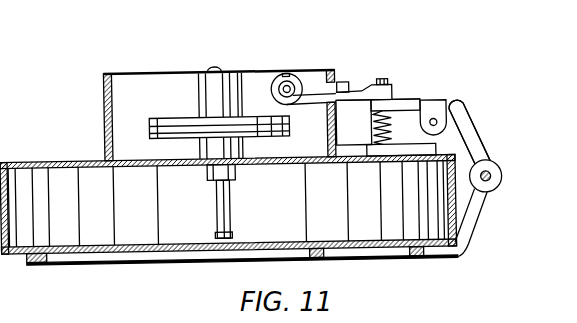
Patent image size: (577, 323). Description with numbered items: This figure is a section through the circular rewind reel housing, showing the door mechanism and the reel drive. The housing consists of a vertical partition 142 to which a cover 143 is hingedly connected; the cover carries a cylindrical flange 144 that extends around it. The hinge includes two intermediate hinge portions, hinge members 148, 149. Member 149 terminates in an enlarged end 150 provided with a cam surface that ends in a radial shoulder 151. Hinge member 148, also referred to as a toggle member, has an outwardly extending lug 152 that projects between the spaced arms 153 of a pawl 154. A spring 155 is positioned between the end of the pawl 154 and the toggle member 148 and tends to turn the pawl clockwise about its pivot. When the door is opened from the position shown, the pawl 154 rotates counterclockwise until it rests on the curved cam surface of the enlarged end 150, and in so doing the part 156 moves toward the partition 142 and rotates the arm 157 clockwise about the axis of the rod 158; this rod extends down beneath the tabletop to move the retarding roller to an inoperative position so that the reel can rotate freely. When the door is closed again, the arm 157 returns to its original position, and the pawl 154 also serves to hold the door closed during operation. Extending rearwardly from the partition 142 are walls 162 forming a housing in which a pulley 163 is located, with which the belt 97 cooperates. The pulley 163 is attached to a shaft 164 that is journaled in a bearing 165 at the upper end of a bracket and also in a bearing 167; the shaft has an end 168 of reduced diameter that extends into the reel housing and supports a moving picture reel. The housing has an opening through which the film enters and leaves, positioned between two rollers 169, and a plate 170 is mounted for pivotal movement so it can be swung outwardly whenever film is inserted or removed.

The belt 97 is at (141, 128).
The vertical partition 142 is at (227, 152).
The cover 143 is at (228, 212).
The cylindrical flange 144 is at (376, 201).
The hinge member 148 is at (491, 131).
The hinge member 149 is at (491, 222).
The enlarged end 150 is at (502, 182).
The radial shoulder 151 is at (510, 167).
The lug 152 is at (475, 98).
The spaced arms 153 is at (437, 106).
The pawl 154 is at (483, 133).
The spring 155 is at (386, 128).
The part of pawl 156 is at (377, 79).
The arm 157 is at (318, 75).
The rod 158 is at (288, 75).
The walls 162 is at (200, 116).
The pulley 163 is at (219, 114).
The shaft 164 is at (206, 58).
The bearing 165 is at (231, 80).
The bearing 167 is at (204, 149).
The reduced-diameter end 168 is at (208, 201).
The rollers 169 is at (80, 206).
The plate 170 is at (229, 262).